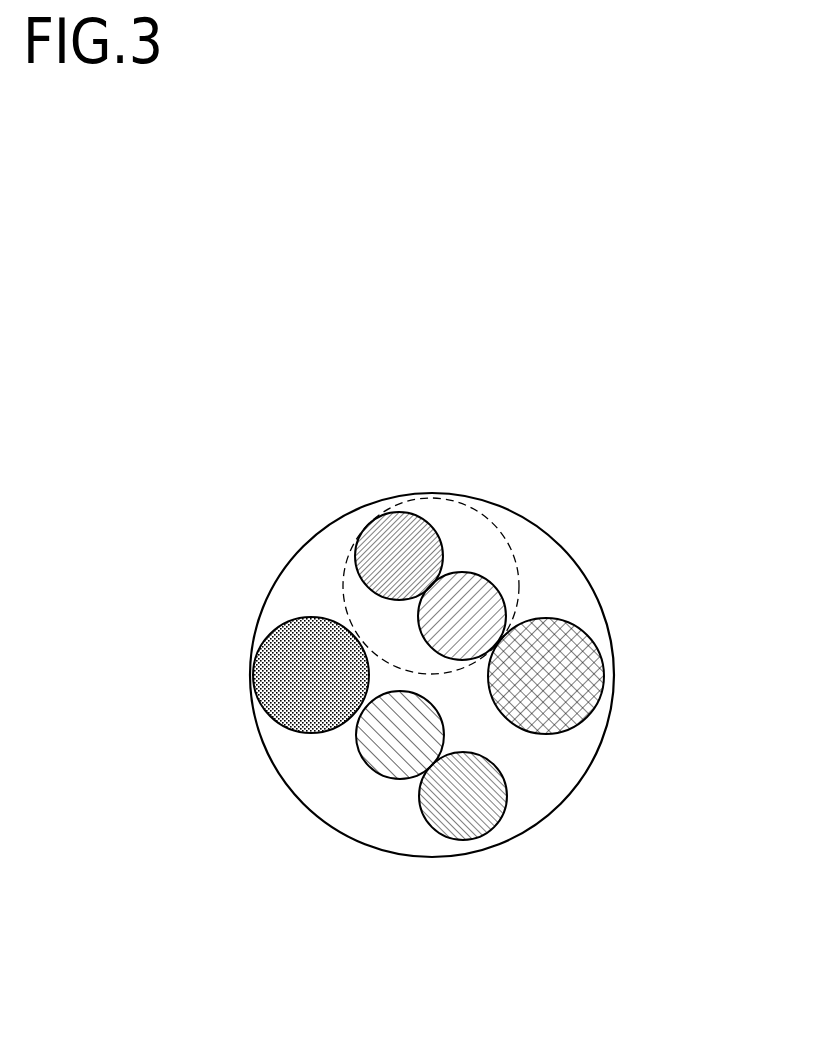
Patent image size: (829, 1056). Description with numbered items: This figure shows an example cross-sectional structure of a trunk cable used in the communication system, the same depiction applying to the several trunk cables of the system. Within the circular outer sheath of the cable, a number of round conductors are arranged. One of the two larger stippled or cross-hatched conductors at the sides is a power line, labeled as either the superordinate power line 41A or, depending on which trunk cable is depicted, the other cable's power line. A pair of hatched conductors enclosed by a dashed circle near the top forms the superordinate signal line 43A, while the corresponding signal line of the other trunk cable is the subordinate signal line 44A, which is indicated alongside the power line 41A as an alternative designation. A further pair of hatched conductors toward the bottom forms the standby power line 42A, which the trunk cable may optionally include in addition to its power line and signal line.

The superordinate power line 41A is at (292, 622).
The subordinate signal line 44A is at (590, 640).
The standby power line 42A is at (420, 800).
The superordinate signal line 43A is at (505, 538).